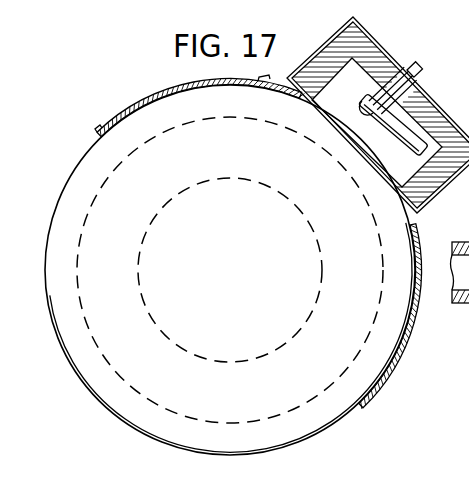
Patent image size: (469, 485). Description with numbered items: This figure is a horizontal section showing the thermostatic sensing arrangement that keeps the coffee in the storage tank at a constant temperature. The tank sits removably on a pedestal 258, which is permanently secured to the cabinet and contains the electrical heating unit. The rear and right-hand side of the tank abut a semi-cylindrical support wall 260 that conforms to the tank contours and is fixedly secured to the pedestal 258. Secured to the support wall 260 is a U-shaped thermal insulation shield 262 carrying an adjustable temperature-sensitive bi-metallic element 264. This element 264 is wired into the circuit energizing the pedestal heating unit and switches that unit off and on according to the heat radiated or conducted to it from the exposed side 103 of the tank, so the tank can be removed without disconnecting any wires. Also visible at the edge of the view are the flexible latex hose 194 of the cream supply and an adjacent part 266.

The pedestal 258 is at (102, 404).
The semi-cylindrical support wall 260 is at (173, 88).
The U-shaped thermal insulation shield 262 is at (432, 110).
The exposed side 103 is at (343, 120).
The bi-metallic element 264 is at (399, 124).
The smaller hose 194 is at (455, 241).
The member 266 is at (460, 313).